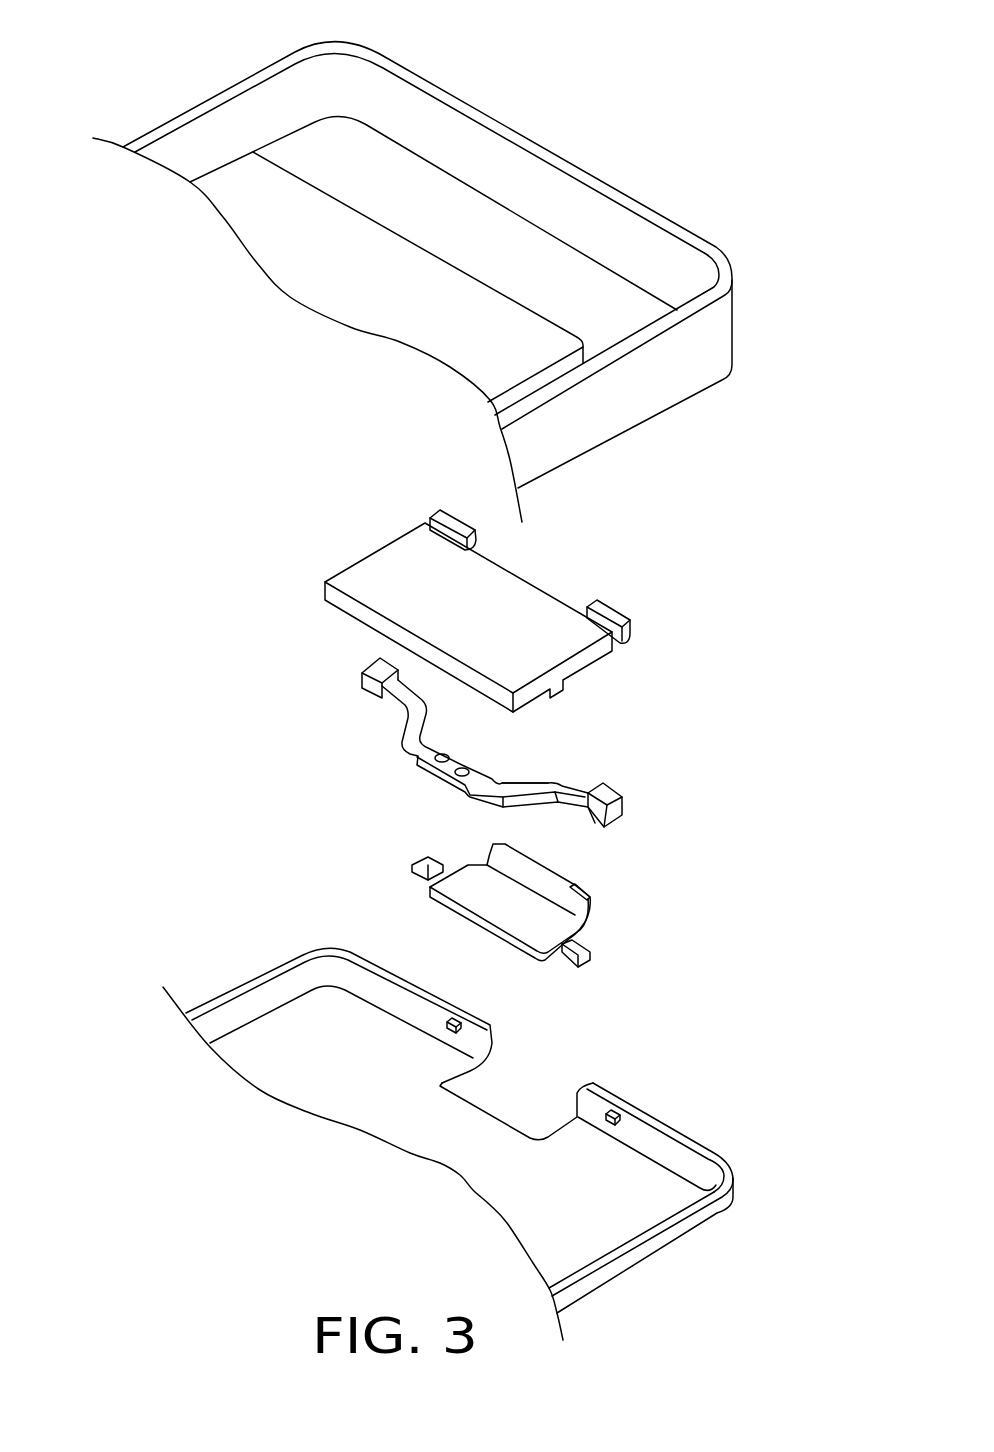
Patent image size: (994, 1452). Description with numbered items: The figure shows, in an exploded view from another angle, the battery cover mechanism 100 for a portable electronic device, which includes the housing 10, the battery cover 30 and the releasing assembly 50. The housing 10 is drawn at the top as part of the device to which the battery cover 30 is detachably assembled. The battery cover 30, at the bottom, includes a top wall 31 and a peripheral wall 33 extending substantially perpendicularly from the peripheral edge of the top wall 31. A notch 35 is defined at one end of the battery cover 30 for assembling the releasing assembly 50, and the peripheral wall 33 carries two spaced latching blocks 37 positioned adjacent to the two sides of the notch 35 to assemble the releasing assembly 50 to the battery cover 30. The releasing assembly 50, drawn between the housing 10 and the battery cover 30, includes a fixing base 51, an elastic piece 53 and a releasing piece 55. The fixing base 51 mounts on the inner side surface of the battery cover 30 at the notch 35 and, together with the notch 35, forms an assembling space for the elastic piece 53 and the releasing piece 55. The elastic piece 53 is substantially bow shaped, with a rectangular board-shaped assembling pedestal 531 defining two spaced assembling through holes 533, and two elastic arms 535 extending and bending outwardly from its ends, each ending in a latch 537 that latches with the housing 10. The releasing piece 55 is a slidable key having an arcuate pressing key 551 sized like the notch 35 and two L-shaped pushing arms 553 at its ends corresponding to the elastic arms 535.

The battery cover mechanism 100 is at (528, 76).
The housing 10 is at (663, 363).
The battery cover 30 is at (264, 950).
The top wall 31 is at (610, 1210).
The peripheral wall 33 is at (655, 1147).
The notch 35 is at (507, 1103).
The latching blocks 37 is at (468, 1018).
The releasing assembly 50 is at (270, 523).
The fixing base 51 is at (347, 547).
The elastic piece 53 is at (341, 653).
The assembling pedestal 531 is at (461, 760).
The assembling through holes 533 is at (448, 756).
The elastic arms 535 is at (538, 787).
The latch 537 is at (603, 797).
The releasing piece 55 is at (405, 845).
The pressing key 551 is at (497, 904).
The pushing arms 553 is at (588, 947).